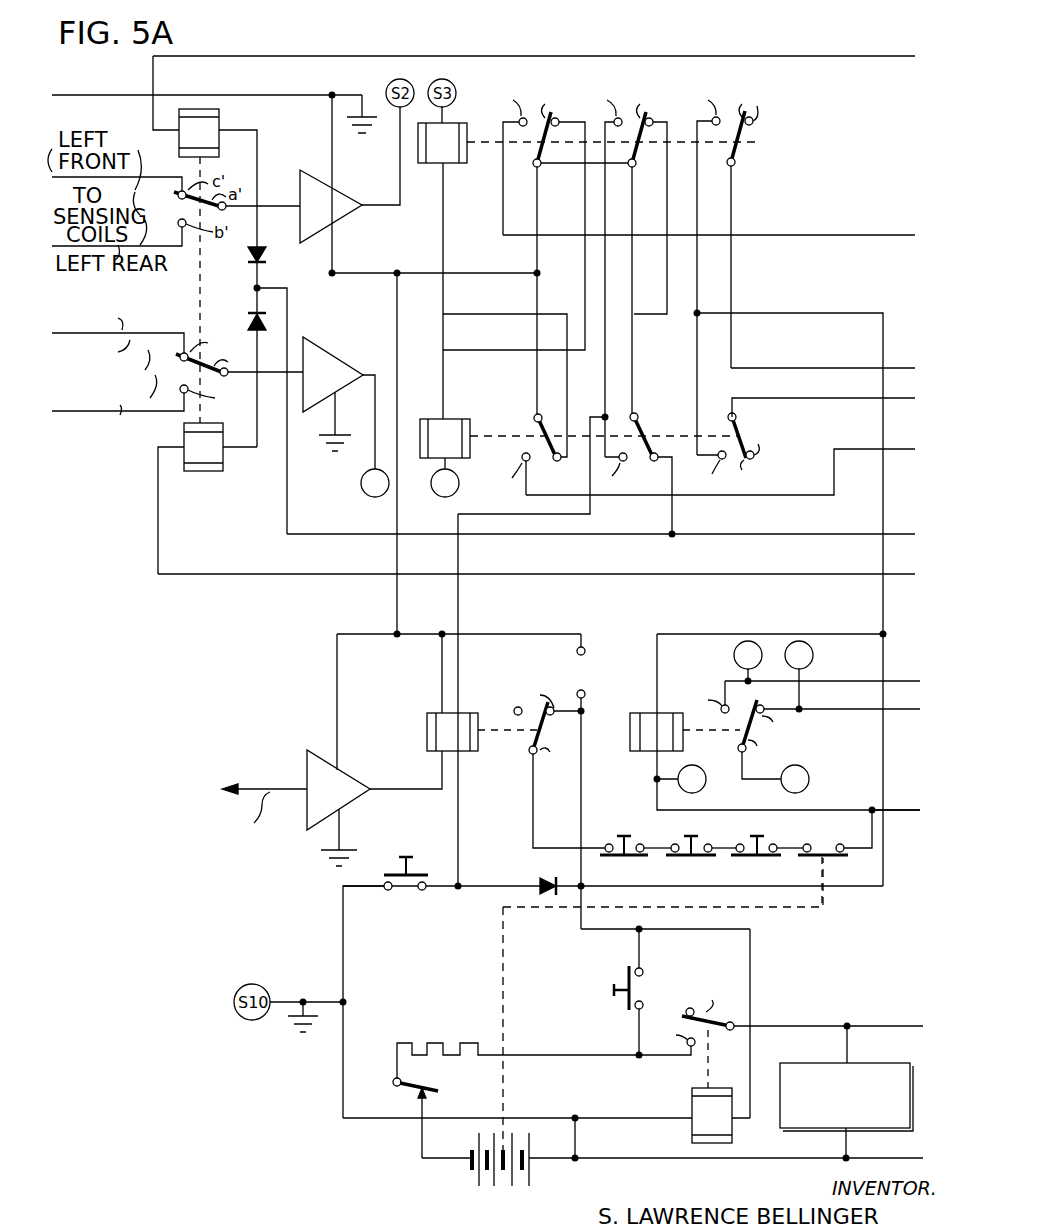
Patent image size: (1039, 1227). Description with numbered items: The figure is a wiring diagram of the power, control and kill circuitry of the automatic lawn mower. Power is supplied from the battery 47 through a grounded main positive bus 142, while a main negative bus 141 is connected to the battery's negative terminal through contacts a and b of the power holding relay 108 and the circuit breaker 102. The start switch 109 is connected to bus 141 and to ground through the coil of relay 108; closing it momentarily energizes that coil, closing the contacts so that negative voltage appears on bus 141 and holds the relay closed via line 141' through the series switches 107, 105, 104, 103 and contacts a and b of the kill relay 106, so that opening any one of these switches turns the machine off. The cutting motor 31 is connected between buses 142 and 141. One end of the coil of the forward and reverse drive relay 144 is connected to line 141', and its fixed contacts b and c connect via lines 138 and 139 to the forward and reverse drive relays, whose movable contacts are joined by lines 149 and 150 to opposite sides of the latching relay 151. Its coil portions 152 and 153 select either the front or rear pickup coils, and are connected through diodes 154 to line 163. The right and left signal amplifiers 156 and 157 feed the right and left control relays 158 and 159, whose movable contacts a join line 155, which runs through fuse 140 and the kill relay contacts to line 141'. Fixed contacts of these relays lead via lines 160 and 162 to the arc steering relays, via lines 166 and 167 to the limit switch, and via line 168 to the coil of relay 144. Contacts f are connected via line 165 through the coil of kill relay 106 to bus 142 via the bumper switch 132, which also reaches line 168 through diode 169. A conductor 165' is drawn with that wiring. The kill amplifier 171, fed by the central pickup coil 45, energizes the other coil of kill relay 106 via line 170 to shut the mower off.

The line 150 is at (863, 58).
The coil portion 153 is at (221, 126).
The diodes 154 is at (252, 262).
The left signal amplifier 157 is at (333, 196).
The line 155 is at (333, 256).
The right signal amplifier 156 is at (342, 366).
The latching relay 151 is at (143, 441).
The coil portion 152 is at (226, 457).
The left control relay 159 is at (490, 152).
The right control relay 158 is at (497, 434).
The line 162 is at (893, 235).
The line 168 is at (866, 313).
The line 167 is at (893, 368).
The line 166 is at (893, 398).
The line 160 is at (893, 449).
The line 163 is at (893, 534).
The line 149 is at (893, 574).
The line 165 is at (504, 472).
The conductor 165' is at (483, 700).
The line 170 is at (388, 789).
The kill amplifier 171 is at (303, 757).
The central pickup coil 45 is at (239, 830).
The kill relay 106 is at (495, 718).
The fuse 140 is at (583, 690).
The forward and reverse drive relay 144 is at (682, 707).
The line 139 is at (893, 681).
The line 138 is at (893, 709).
The line 141' is at (880, 788).
The series switch 103 is at (622, 835).
The series switch 104 is at (689, 838).
The series switch 105 is at (760, 838).
The series switch 107 is at (826, 864).
The diode 169 is at (548, 898).
The bumper switch 132 is at (406, 857).
The circuit breaker 102 is at (405, 1040).
The main negative bus 141 is at (725, 1023).
The start switch 109 is at (608, 978).
The power holding relay 108 is at (697, 1072).
The cutting motor 31 is at (870, 1063).
The main positive bus 142 is at (575, 1162).
The battery 47 is at (491, 1184).